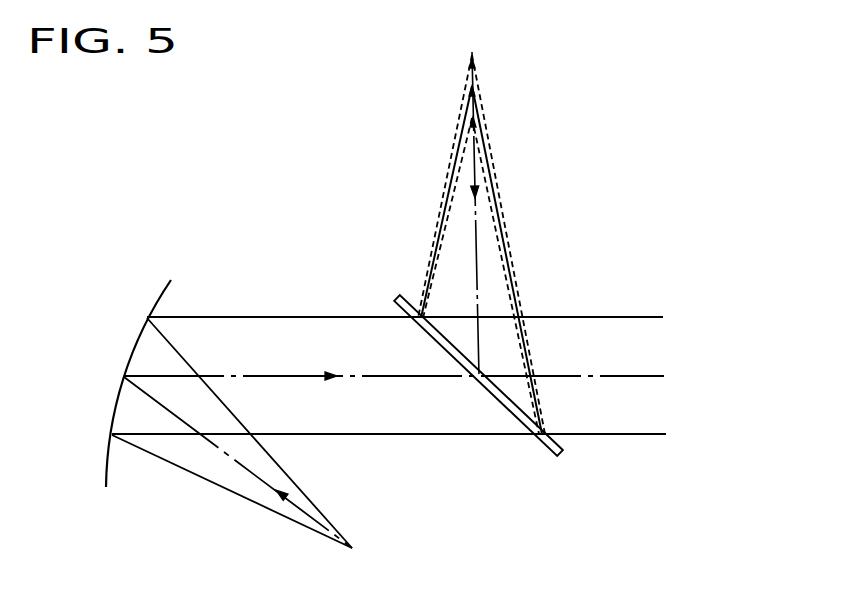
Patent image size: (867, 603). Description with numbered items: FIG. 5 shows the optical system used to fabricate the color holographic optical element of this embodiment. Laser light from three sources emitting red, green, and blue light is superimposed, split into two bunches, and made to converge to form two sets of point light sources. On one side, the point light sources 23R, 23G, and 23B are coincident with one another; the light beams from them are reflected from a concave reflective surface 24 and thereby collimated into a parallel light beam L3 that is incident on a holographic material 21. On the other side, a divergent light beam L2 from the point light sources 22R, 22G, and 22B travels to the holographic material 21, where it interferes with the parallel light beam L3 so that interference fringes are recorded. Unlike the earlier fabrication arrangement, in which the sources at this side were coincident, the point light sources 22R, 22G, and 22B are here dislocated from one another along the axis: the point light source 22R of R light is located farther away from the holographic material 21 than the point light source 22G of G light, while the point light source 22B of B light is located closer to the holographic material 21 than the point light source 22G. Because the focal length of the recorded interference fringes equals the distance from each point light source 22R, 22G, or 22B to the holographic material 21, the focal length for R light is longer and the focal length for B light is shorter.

The holographic material 21 is at (548, 447).
The point light source of R light 22R is at (472, 52).
The point light source of G light 22G is at (474, 84).
The point light source of B light 22B is at (474, 116).
The point light source of R light 23R is at (355, 549).
The point light source of G light 23G is at (319, 471).
The point light source of B light 23B is at (342, 500).
The concave reflective surface 24 is at (158, 297).
The divergent light beam L2 is at (498, 245).
The parallel light beam L3 is at (299, 332).